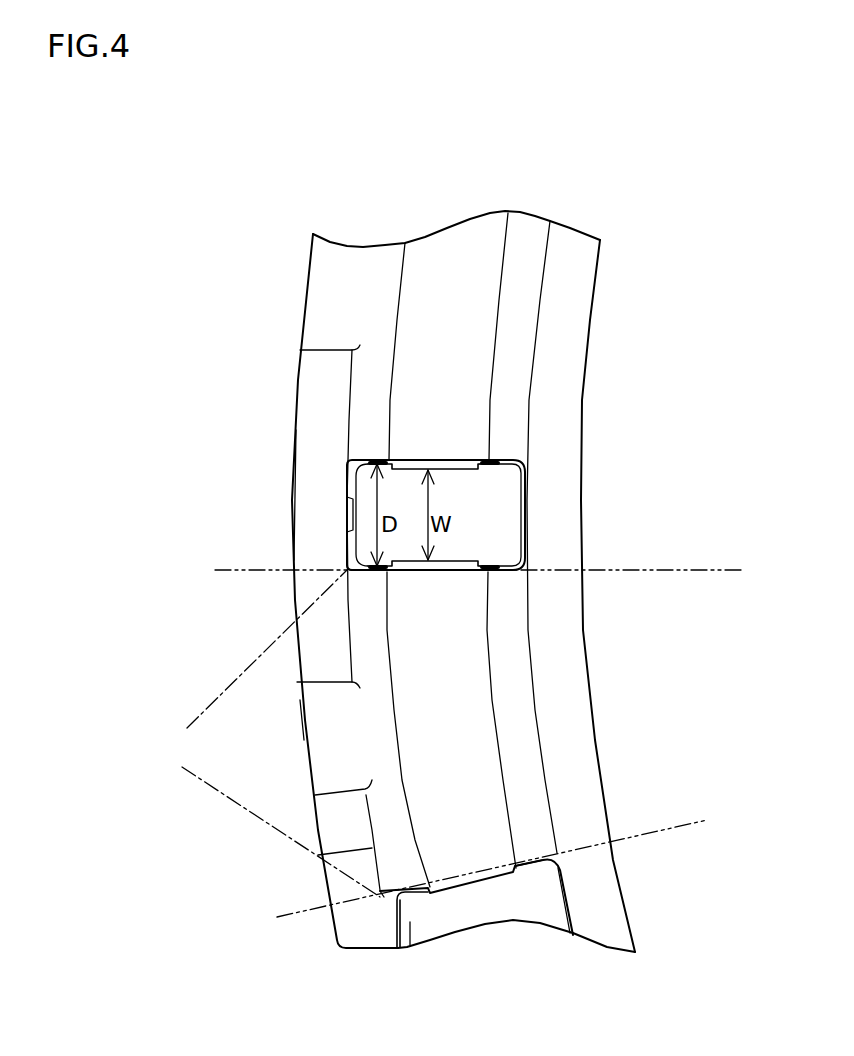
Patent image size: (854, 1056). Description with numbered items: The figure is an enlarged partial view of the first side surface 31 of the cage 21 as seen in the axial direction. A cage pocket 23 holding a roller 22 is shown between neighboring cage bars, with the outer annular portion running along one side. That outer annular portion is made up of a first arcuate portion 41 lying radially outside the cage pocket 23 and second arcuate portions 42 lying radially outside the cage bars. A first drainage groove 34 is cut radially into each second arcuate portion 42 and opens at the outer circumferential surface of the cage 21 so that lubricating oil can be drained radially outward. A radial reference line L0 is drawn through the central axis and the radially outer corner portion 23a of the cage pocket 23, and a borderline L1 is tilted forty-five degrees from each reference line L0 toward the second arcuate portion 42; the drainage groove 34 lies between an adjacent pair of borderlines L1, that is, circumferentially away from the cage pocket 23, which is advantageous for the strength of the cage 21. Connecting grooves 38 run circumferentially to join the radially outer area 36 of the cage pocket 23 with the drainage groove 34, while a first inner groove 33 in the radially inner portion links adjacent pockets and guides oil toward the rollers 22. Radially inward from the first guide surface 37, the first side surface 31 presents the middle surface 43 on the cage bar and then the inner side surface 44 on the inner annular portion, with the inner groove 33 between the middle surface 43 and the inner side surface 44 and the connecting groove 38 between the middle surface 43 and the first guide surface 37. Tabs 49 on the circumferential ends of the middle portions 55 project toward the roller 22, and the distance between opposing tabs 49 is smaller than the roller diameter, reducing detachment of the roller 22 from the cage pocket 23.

The cage 21 is at (310, 265).
The roller 22 is at (413, 480).
The cage pocket 23 is at (347, 558).
The radially outer corner portion 23a is at (347, 568).
The first side surface 31 is at (440, 263).
The first inner groove 33 is at (527, 250).
The first drainage groove 34 is at (328, 755).
The radially outer area 36 is at (363, 513).
The first guide surface 37 is at (313, 473).
The connecting groove 38 is at (370, 388).
The first arcuate portion 41 is at (293, 500).
The second arcuate portion 42 is at (327, 732).
The middle surface 43 is at (467, 700).
The inner side surface 44 is at (575, 308).
The tab 49 is at (463, 478).
The middle portion 55 is at (502, 293).
The reference line L0 is at (660, 570).
The borderline L1 is at (230, 687).